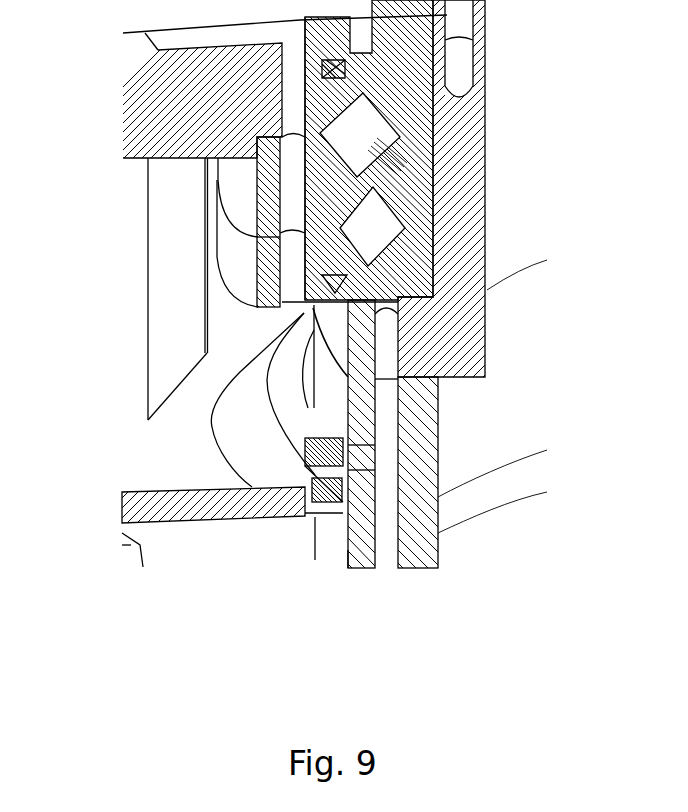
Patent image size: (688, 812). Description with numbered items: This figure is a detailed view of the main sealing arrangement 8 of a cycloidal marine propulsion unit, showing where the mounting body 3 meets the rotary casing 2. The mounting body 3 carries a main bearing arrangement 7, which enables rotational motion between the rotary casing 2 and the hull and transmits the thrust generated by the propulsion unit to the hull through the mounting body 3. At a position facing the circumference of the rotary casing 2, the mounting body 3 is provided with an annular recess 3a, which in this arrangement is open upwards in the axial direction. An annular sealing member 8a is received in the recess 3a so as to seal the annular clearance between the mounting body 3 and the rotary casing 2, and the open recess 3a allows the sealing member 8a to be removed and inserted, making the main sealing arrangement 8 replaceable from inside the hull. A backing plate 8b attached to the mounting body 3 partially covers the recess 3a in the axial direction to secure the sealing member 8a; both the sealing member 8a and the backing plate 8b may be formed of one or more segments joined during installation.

The rotary casing 2 is at (347, 552).
The mounting body 3 is at (193, 457).
The annular recess 3a is at (330, 472).
The main bearing arrangement 7 is at (412, 83).
The main sealing arrangement 8 is at (357, 480).
The annular sealing member 8a is at (347, 458).
The backing plate 8b is at (461, 358).